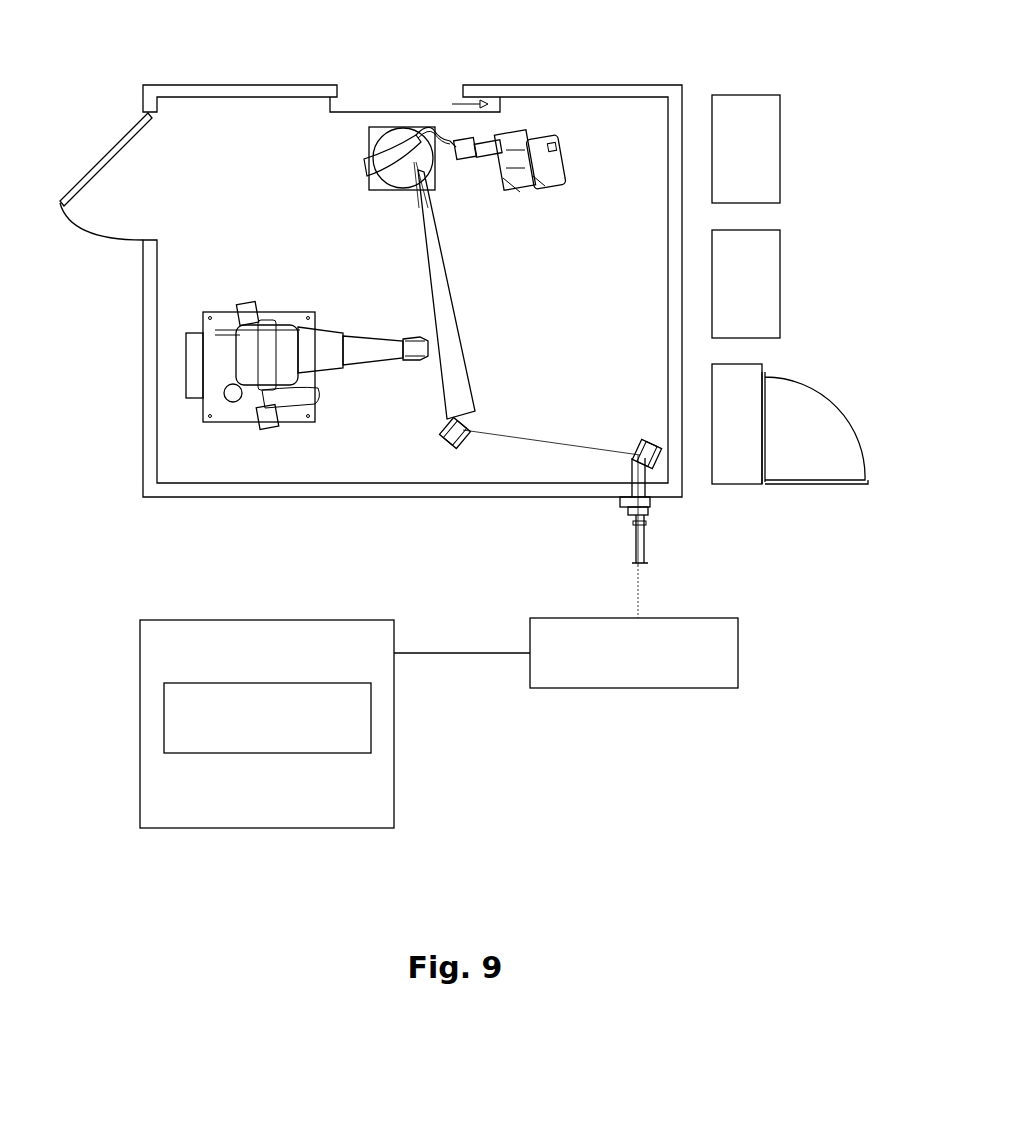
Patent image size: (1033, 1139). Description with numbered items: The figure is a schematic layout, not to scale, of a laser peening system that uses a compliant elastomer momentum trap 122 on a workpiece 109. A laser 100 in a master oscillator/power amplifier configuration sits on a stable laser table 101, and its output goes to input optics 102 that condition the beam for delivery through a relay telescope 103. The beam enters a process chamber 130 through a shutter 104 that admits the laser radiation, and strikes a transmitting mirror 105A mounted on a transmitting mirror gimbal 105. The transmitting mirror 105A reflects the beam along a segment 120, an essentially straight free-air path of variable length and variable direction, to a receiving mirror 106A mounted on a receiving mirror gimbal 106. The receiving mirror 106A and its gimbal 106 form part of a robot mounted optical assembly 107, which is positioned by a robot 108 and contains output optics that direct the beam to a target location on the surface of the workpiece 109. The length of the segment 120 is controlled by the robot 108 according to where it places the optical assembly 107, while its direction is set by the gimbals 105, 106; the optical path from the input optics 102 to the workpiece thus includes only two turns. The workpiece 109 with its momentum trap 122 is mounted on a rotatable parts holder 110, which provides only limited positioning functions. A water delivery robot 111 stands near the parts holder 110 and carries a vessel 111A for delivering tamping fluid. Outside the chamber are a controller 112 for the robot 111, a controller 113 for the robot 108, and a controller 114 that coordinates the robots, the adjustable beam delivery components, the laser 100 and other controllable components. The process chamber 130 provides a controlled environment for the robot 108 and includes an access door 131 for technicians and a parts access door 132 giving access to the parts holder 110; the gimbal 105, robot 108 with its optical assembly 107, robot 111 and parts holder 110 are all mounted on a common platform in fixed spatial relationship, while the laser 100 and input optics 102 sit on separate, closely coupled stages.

The laser 100 is at (363, 714).
The laser table 101 is at (387, 801).
The input optics 102 is at (738, 653).
The relay telescope 103 is at (645, 548).
The shutter 104 is at (620, 510).
The transmitting mirror gimbal 105 is at (656, 462).
The transmitting mirror 105A is at (636, 457).
The receiving mirror gimbal 106 is at (445, 436).
The receiving mirror 106A is at (466, 428).
The robot mounted optical assembly 107 is at (418, 243).
The robot 108 is at (275, 310).
The workpiece 109 is at (367, 171).
The rotatable parts holder 110 is at (369, 143).
The water delivery robot 111 is at (562, 145).
The vessel 111A is at (458, 140).
The controller 112 is at (740, 107).
The controller 113 is at (740, 245).
The controller 114 is at (740, 382).
The segment 120 is at (575, 445).
The compliant elastomer momentum trap 122 is at (382, 153).
The process chamber 130 is at (228, 90).
The access door 131 is at (108, 157).
The parts access door 132 is at (433, 105).